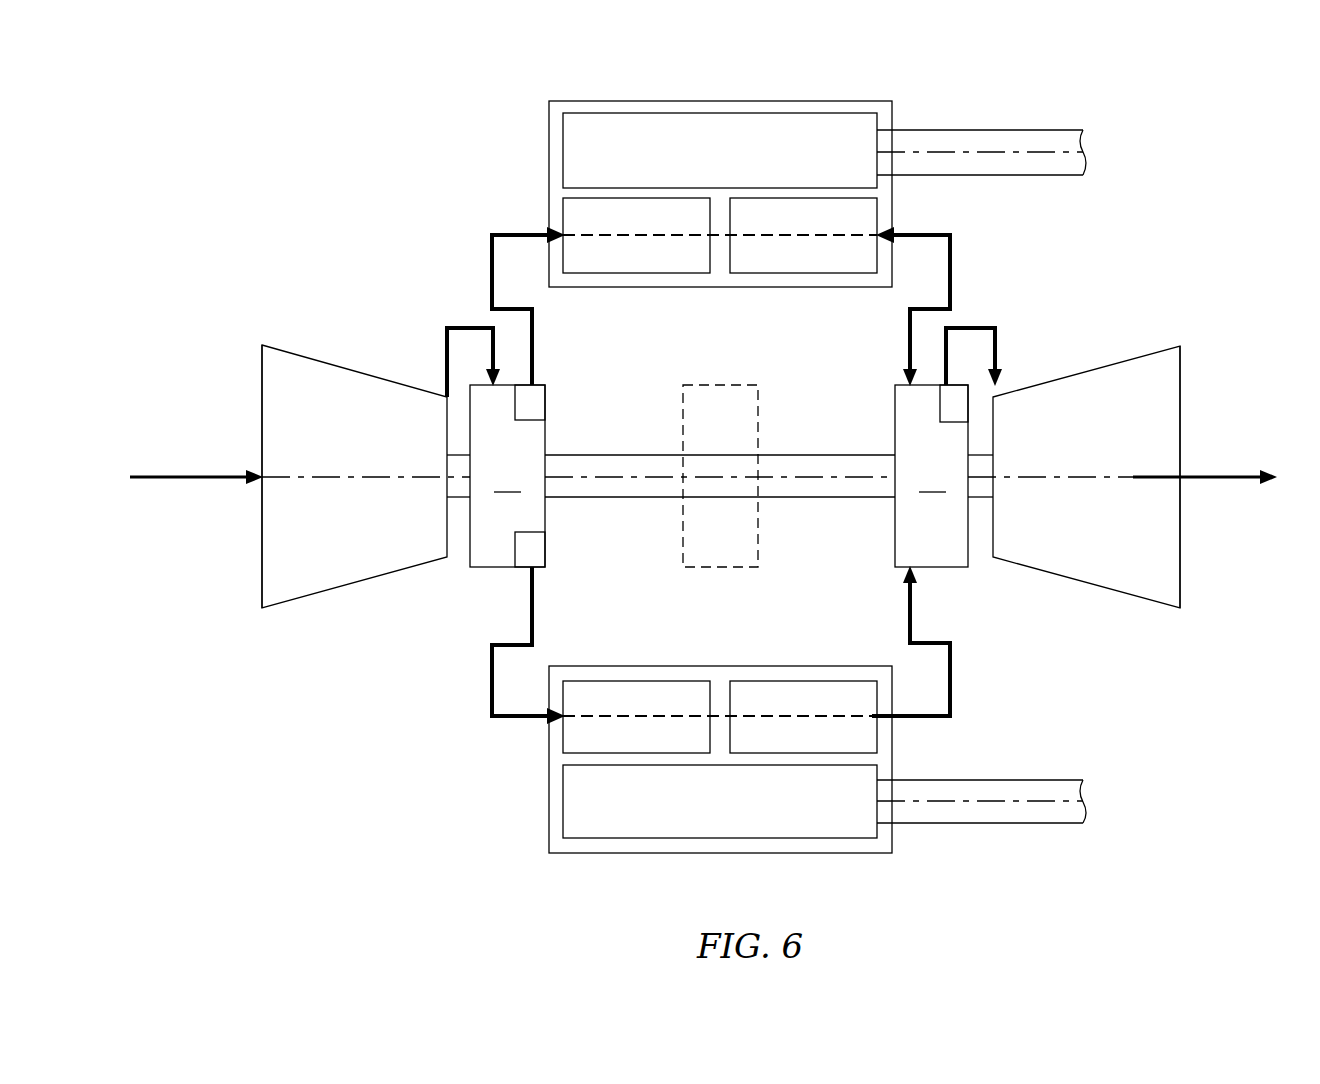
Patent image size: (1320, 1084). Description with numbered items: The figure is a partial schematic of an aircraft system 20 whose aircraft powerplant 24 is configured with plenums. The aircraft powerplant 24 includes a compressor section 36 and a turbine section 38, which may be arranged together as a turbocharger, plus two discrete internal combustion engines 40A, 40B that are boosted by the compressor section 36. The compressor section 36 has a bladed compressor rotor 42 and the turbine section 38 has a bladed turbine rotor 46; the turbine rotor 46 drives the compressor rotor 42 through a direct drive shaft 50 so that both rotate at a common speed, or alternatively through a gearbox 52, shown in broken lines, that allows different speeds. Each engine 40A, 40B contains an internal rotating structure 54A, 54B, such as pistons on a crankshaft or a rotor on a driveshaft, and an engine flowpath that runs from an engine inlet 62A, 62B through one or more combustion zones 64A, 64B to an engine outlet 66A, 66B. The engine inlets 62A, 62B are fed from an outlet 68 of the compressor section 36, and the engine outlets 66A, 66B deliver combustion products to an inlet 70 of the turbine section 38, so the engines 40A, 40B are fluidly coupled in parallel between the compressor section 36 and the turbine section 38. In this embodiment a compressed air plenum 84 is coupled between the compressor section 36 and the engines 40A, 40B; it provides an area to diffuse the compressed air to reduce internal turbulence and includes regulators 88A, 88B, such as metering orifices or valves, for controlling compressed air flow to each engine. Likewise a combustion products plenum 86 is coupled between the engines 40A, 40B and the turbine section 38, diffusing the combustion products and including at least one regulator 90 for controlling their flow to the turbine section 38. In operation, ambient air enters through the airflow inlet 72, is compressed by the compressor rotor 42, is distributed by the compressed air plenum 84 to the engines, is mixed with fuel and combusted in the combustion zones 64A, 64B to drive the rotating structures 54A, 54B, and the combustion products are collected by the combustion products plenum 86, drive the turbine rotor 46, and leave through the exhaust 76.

The aircraft system 20 is at (258, 112).
The aircraft powerplant 24 is at (366, 120).
The compressor section 36 is at (260, 316).
The turbine section 38 is at (1186, 322).
The internal combustion engine 40A is at (902, 90).
The internal combustion engine 40B is at (869, 878).
The compressor rotor 42 is at (262, 540).
The turbine rotor 46 is at (1182, 545).
The shaft 50 is at (634, 452).
The gearbox 52 is at (735, 385).
The rotating structure 54A is at (735, 113).
The rotating structure 54B is at (590, 838).
The inlet 62A is at (558, 234).
The inlet 62B is at (557, 722).
The combustion zones 64A is at (648, 198).
The combustion zones 64B is at (648, 753).
The outlet 66A is at (887, 232).
The outlet 66B is at (880, 725).
The outlet 68 is at (447, 395).
The inlet 70 is at (995, 393).
The airflow inlet 72 is at (147, 480).
The exhaust 76 is at (1250, 470).
The compressed air plenum 84 is at (507, 476).
The combustion products plenum 86 is at (931, 476).
The regulator 88A is at (545, 395).
The regulator 88B is at (545, 545).
The regulator 90 is at (940, 400).